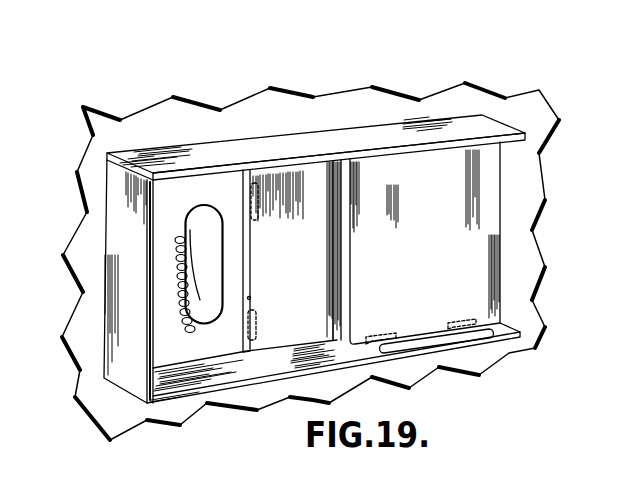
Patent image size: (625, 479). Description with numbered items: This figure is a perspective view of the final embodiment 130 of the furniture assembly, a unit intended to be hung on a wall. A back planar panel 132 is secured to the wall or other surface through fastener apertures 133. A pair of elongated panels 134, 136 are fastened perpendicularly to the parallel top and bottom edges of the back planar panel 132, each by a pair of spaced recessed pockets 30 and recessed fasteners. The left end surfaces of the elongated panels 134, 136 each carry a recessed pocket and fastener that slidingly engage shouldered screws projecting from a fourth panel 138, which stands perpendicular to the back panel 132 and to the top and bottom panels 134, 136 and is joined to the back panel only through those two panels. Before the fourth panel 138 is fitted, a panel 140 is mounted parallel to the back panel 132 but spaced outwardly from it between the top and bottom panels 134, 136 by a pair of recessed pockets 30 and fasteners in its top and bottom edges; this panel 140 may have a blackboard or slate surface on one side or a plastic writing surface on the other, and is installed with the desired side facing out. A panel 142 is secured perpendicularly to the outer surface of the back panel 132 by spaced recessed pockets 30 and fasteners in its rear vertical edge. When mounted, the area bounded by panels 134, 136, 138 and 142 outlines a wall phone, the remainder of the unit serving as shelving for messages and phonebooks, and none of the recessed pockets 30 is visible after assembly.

The final embodiment of the assembly 130 is at (529, 58).
The back planar panel 132 is at (246, 222).
The fastener apertures 133 is at (257, 182).
The elongated panel 134 is at (319, 137).
The elongated panel 136 is at (226, 369).
The fourth panel 138 is at (120, 197).
The panel 140 is at (447, 231).
The panel 142 is at (278, 263).
The recessed pockets 30 is at (258, 197).